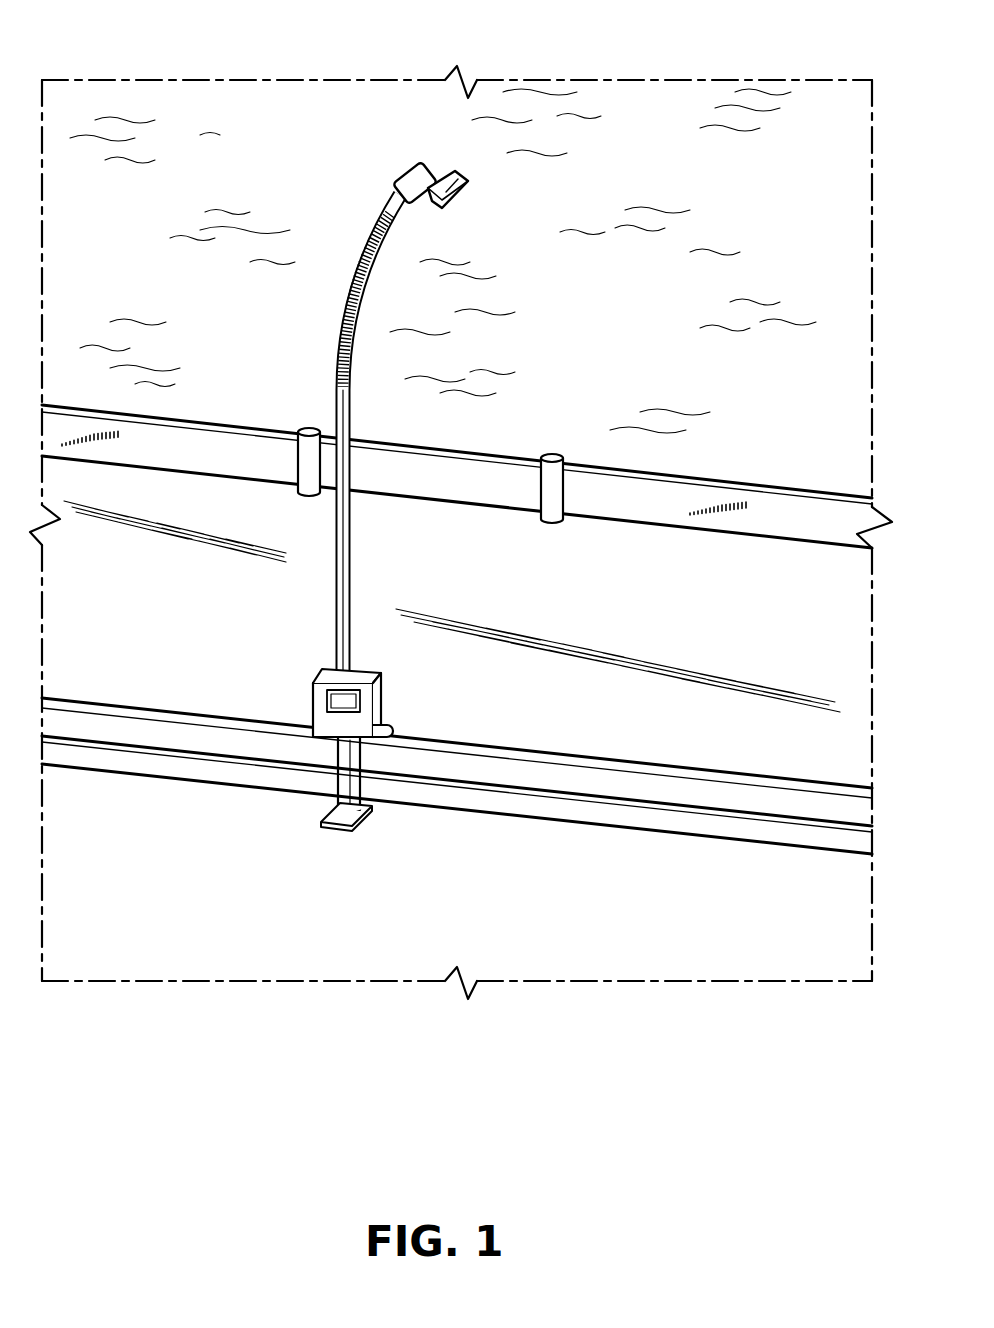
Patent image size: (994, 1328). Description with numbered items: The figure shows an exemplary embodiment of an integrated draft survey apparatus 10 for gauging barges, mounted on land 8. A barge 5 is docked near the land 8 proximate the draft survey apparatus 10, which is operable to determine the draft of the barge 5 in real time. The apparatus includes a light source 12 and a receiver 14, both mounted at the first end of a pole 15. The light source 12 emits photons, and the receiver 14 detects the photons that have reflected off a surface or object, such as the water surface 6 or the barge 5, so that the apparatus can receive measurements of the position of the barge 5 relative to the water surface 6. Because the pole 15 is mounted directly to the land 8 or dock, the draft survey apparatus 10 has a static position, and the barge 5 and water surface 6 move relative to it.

The barge 5 is at (838, 611).
The water surface 6 is at (840, 297).
The land 8 is at (290, 943).
The draft survey apparatus 10 is at (397, 415).
The light source 12 is at (456, 175).
The receiver 14 is at (421, 164).
The pole 15 is at (348, 568).